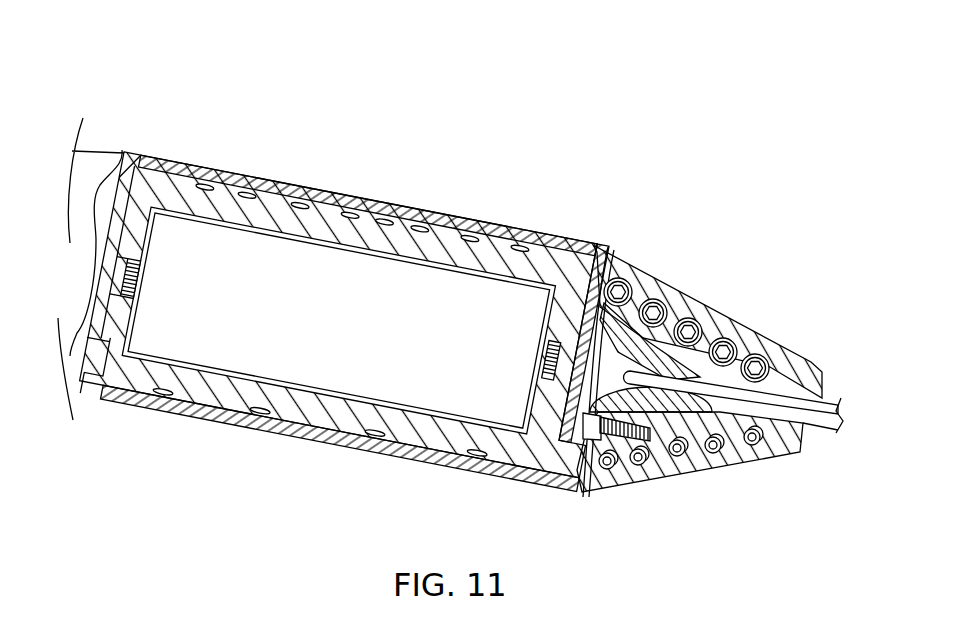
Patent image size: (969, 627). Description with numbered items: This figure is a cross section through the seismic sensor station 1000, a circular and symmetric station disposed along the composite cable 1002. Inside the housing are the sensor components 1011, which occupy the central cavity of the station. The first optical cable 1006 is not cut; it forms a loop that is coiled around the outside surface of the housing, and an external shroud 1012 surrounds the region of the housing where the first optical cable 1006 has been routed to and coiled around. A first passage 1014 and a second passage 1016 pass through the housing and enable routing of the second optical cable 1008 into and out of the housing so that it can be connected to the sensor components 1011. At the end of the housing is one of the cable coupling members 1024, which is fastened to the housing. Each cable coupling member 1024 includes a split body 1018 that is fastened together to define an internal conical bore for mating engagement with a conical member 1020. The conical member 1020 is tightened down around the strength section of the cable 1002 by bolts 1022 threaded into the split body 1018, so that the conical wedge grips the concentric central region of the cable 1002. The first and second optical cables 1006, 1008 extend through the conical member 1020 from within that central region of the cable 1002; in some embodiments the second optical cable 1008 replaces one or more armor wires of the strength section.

The seismic sensor station 1000 is at (360, 126).
The composite cable 1002 is at (821, 400).
The first optical cable 1006 is at (372, 434).
The second optical cable 1008 is at (613, 420).
The sensor components 1011 is at (358, 316).
The external shroud 1012 is at (190, 418).
The first passage 1014 is at (608, 247).
The second passage 1016 is at (122, 150).
The split body 1018 is at (742, 447).
The conical member 1020 is at (658, 312).
The bolts 1022 is at (643, 467).
The cable coupling member 1024 is at (685, 249).